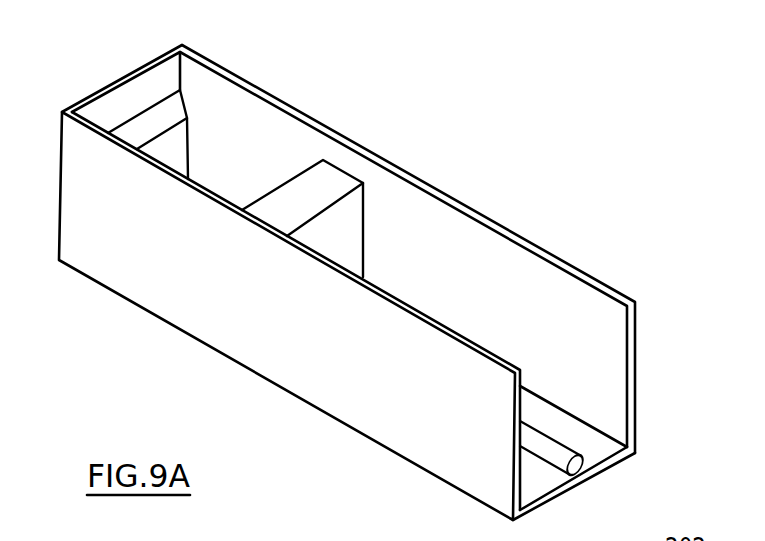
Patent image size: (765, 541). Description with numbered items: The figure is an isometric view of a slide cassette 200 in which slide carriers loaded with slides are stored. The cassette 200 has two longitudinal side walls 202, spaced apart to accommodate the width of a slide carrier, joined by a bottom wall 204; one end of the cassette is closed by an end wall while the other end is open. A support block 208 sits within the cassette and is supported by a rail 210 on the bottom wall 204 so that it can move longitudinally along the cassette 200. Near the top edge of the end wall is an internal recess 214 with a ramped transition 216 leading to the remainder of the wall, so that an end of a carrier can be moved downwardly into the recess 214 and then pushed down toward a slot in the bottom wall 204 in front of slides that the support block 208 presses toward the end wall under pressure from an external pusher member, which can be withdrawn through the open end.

The cassette 200 is at (362, 289).
The longitudinal side wall 202 is at (468, 240).
The bottom wall 204 is at (605, 460).
The support block 208 is at (335, 182).
The rail 210 is at (557, 450).
The internal recess 214 is at (113, 108).
The ramped transition 216 is at (157, 120).